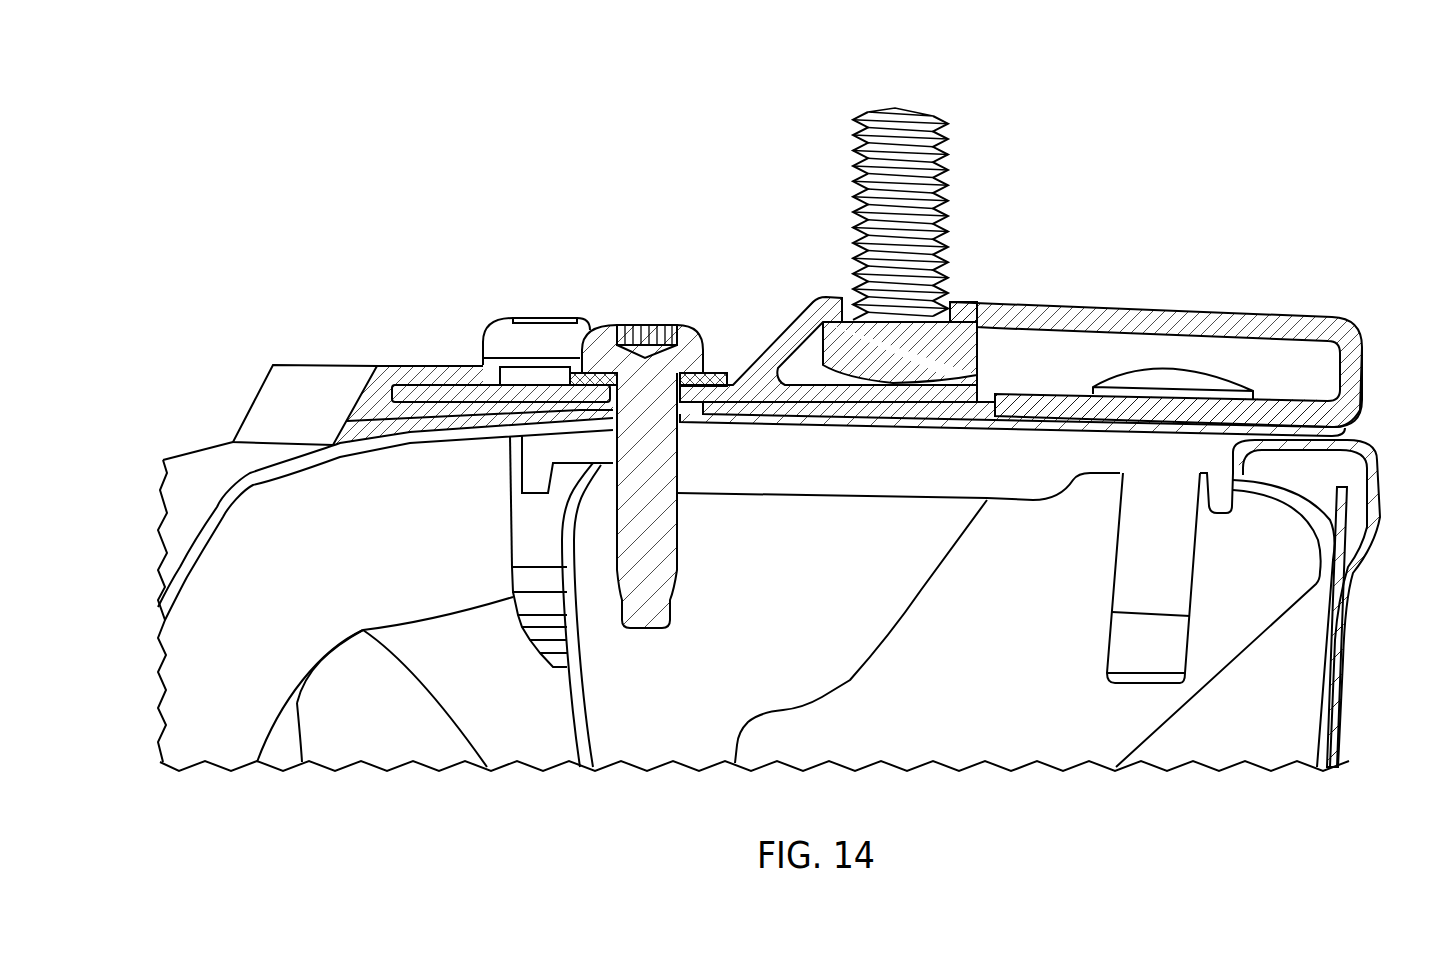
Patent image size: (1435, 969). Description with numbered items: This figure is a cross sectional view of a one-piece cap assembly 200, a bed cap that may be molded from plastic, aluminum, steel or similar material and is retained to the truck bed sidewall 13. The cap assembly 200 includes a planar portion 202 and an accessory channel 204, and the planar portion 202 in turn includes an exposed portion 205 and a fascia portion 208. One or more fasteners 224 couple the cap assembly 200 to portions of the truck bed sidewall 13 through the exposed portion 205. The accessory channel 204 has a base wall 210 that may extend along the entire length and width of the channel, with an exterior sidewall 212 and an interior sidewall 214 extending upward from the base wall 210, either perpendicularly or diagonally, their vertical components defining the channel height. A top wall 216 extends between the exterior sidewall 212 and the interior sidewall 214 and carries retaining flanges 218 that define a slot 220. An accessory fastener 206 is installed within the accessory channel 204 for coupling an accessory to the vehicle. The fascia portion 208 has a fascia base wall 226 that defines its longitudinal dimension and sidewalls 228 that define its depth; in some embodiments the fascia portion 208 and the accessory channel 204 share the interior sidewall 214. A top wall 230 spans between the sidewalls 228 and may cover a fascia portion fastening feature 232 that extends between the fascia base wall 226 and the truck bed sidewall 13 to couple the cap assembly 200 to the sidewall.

The truck bed sidewall 13 is at (190, 420).
The one-piece cap assembly 200 is at (265, 110).
The planar portion 202 is at (415, 250).
The accessory channel 204 is at (934, 193).
The exposed portion 205 is at (416, 366).
The accessory fastener 206 is at (828, 163).
The fascia portion 208 is at (1222, 163).
The base wall 210 is at (895, 402).
The exterior sidewall 212 is at (777, 347).
The interior sidewall 214 is at (988, 337).
The top wall 216 is at (990, 310).
The retaining flanges 218 is at (833, 300).
The slot 220 is at (927, 122).
The fastener 224 is at (506, 318).
The fascia base wall 226 is at (1225, 410).
The sidewalls 228 is at (1352, 388).
The top wall 230 is at (1300, 328).
The fascia portion fastening feature 232 is at (1172, 377).